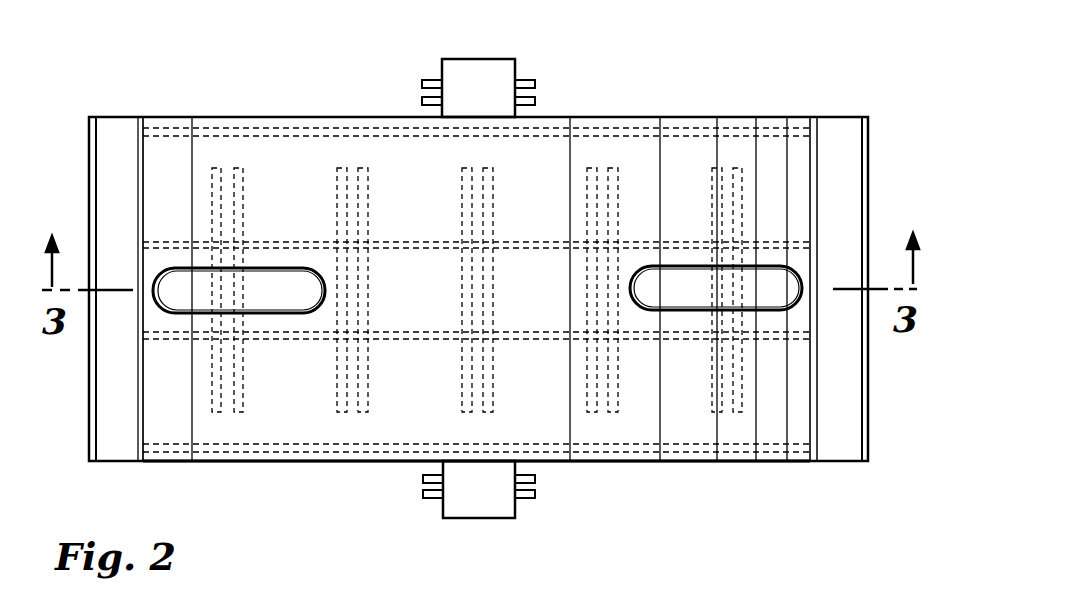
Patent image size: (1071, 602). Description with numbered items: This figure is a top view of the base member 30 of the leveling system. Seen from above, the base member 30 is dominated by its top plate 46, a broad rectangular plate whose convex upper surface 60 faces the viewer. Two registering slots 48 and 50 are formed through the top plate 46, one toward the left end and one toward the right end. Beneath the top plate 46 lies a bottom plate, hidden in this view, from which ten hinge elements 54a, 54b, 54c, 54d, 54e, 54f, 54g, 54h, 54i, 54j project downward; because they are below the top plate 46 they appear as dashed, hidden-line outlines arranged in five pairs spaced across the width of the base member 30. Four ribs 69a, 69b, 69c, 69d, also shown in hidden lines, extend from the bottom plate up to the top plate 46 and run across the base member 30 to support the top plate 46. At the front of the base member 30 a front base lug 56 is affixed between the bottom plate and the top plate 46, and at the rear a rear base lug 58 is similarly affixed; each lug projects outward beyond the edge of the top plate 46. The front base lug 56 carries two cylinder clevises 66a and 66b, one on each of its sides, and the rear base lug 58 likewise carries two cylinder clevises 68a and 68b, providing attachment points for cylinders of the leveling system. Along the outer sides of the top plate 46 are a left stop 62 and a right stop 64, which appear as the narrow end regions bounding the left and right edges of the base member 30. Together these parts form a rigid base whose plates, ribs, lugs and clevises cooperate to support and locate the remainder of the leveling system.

The base member 30 is at (814, 103).
The top plate 46 is at (636, 435).
The registering slot 48 is at (292, 303).
The registering slot 50 is at (703, 302).
The hinge element 54a is at (210, 388).
The hinge element 54b is at (245, 388).
The hinge element 54c is at (338, 208).
The hinge element 54d is at (368, 208).
The hinge element 54e is at (462, 377).
The hinge element 54f is at (493, 377).
The hinge element 54g is at (586, 210).
The hinge element 54h is at (618, 210).
The hinge element 54i is at (712, 400).
The hinge element 54j is at (742, 400).
The front base lug 56 is at (481, 508).
The rear base lug 58 is at (487, 73).
The convex upper surface 60 is at (703, 135).
The left stop 62 is at (115, 447).
The right stop 64 is at (835, 447).
The cylinder clevis 66a is at (423, 498).
The cylinder clevis 66b is at (535, 498).
The cylinder clevis 68a is at (422, 80).
The cylinder clevis 68b is at (535, 80).
The rib 69a is at (238, 128).
The rib 69b is at (315, 240).
The rib 69c is at (433, 330).
The rib 69d is at (320, 442).